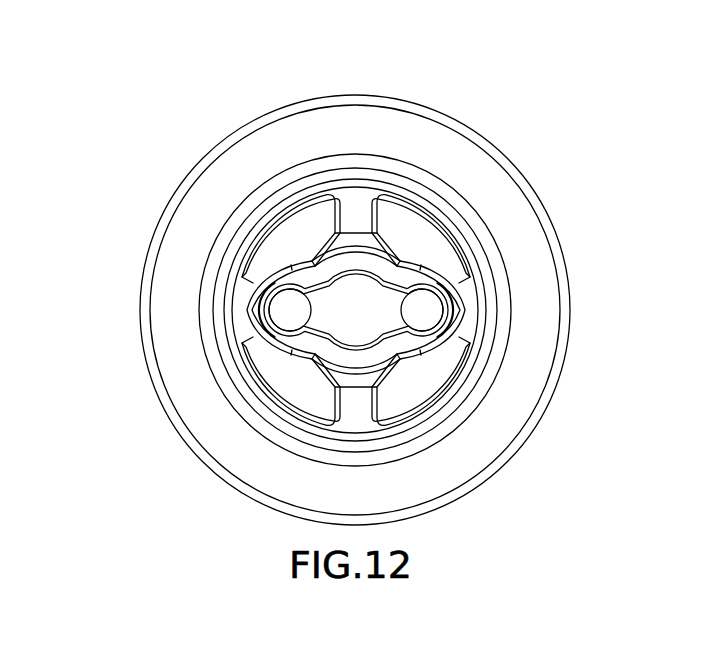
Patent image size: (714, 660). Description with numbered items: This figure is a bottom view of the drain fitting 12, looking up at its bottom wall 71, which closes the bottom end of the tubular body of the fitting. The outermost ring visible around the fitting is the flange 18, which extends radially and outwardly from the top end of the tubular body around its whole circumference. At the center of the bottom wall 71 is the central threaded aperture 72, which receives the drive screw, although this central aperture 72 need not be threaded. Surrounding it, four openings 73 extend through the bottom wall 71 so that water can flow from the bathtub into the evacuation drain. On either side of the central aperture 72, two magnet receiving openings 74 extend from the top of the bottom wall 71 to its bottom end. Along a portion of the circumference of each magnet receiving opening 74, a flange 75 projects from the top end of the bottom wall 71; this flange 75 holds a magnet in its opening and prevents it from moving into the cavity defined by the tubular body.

The drain fitting 12 is at (228, 110).
The flange 18 is at (352, 128).
The bottom wall 71 is at (355, 200).
The central threaded aperture 72 is at (357, 298).
The openings 73 is at (297, 247).
The magnet receiving openings 74 is at (293, 305).
The flange 75 is at (445, 318).